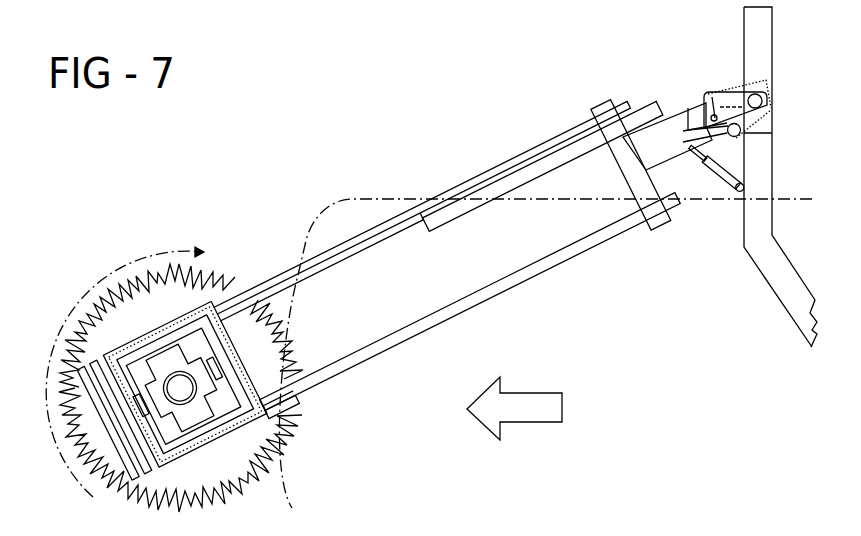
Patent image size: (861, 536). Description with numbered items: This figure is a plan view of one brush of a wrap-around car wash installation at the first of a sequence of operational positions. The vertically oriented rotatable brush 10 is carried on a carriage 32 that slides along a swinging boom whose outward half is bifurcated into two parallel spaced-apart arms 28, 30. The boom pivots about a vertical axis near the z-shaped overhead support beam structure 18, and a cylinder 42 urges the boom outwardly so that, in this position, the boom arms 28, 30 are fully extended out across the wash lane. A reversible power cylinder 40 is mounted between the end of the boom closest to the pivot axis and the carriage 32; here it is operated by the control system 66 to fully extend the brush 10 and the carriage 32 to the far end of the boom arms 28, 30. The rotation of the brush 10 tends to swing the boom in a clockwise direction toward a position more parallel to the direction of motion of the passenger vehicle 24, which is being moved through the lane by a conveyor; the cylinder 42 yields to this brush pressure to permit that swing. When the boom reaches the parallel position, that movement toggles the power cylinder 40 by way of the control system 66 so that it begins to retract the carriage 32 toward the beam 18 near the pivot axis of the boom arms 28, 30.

The rotatable brush 10 is at (222, 272).
The overhead support beam structure 18 is at (772, 171).
The passenger vehicle 24 is at (380, 198).
The boom arm 28 is at (352, 255).
The boom arm 30 is at (388, 345).
The carriage 32 is at (282, 401).
The power cylinder 40 is at (557, 162).
The cylinder 42 is at (722, 173).
The control system 66 is at (723, 88).